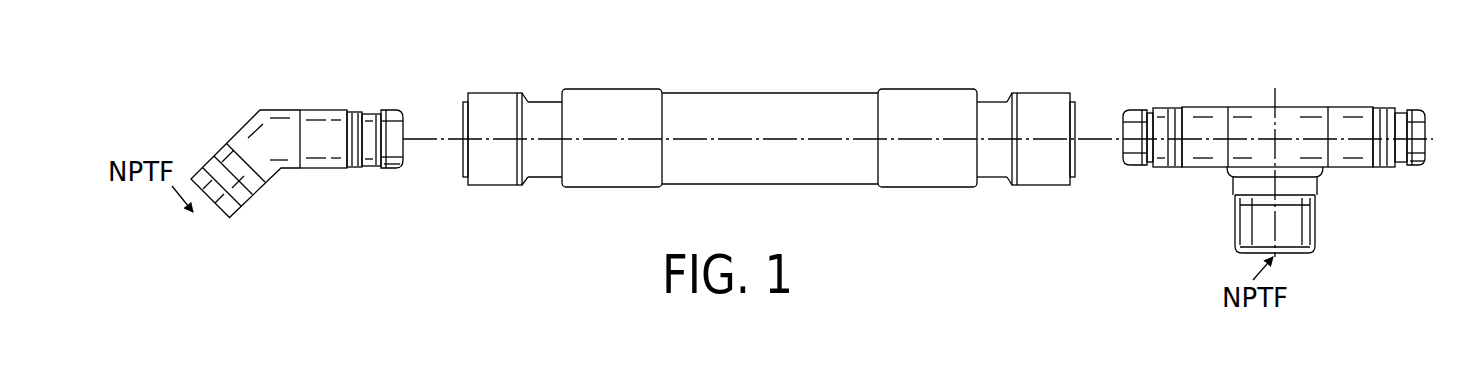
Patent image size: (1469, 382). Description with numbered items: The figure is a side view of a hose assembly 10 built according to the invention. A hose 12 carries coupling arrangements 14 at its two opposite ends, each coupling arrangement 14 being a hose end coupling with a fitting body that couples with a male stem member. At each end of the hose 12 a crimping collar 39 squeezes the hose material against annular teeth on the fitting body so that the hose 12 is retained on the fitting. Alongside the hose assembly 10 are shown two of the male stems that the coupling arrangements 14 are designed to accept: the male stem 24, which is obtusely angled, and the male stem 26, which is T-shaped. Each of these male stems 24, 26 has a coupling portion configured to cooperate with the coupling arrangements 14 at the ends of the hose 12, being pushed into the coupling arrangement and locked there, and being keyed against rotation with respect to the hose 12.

The hose assembly 10 is at (773, 134).
The hose 12 is at (827, 113).
The coupling arrangement 14 is at (499, 112).
The male stem 24 is at (319, 106).
The male stem 26 is at (1314, 104).
The crimping collar 39 is at (610, 172).